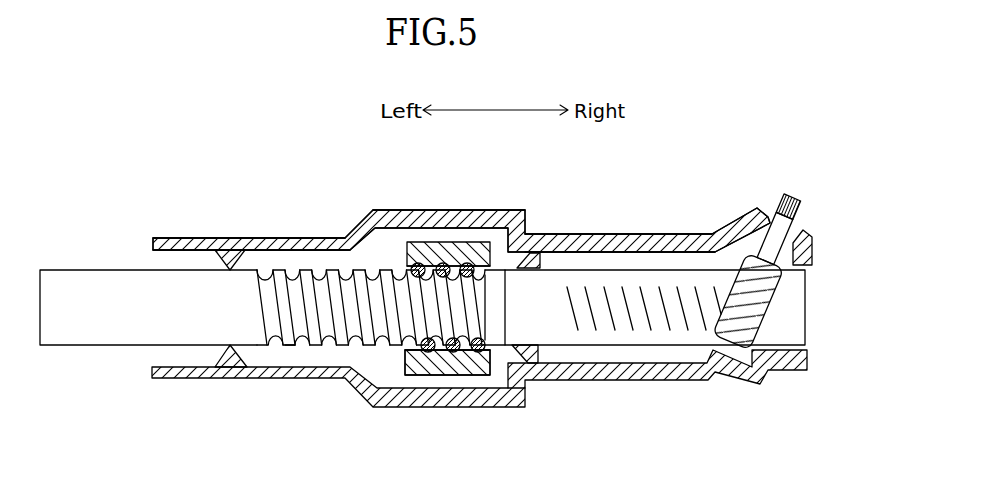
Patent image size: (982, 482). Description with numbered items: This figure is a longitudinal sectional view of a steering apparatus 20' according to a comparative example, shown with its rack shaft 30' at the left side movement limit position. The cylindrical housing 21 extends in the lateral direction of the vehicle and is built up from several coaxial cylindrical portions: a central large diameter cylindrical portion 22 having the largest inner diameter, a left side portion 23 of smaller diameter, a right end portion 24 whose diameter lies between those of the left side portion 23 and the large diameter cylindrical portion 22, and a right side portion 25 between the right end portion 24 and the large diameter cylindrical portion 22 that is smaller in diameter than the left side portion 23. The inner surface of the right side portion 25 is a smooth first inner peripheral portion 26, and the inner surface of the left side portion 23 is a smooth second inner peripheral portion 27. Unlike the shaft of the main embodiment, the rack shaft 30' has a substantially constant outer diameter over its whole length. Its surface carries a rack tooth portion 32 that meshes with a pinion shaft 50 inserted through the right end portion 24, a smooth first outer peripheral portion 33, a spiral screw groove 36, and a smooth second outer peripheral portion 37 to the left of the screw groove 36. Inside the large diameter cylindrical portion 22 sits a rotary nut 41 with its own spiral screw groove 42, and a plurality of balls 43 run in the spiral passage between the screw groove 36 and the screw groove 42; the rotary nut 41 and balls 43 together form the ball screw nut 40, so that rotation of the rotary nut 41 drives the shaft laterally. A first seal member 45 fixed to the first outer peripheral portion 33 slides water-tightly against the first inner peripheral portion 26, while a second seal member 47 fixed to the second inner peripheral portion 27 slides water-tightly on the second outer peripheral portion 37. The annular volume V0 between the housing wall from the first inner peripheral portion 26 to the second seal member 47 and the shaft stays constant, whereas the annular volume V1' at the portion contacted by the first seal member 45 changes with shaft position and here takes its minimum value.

The steering apparatus 20' is at (461, 176).
The housing 21 is at (377, 210).
The large diameter cylindrical portion 22 is at (484, 210).
The left side portion 23 is at (268, 238).
The right end portion 24 is at (806, 238).
The right side portion 25 is at (622, 234).
The first inner peripheral portion 26 is at (677, 252).
The second inner peripheral portion 27 is at (312, 250).
The rack shaft 30' is at (485, 377).
The rack tooth portion 32 is at (678, 323).
The first outer peripheral portion 33 is at (562, 328).
The screw groove 36 is at (356, 350).
The second outer peripheral portion 37 is at (131, 336).
The ball screw nut 40 is at (492, 455).
The rotary nut 41 is at (412, 376).
The screw groove 42 is at (407, 353).
The balls 43 is at (470, 262).
The first seal member 45 is at (530, 266).
The second seal member 47 is at (218, 258).
The pinion shaft 50 is at (756, 258).
The volume V0 is at (303, 358).
The volume V1' is at (555, 427).